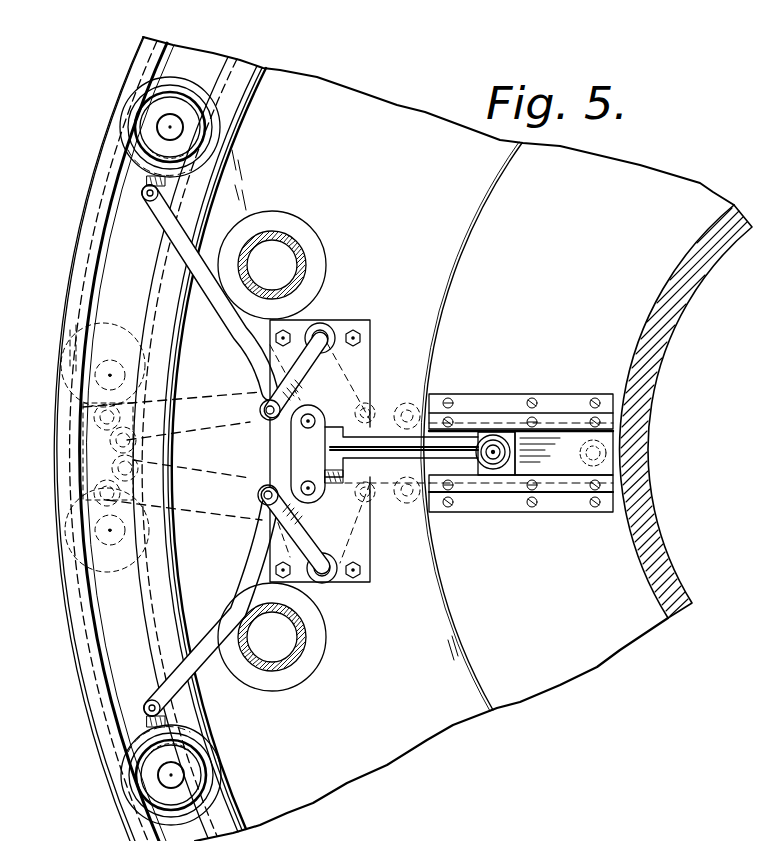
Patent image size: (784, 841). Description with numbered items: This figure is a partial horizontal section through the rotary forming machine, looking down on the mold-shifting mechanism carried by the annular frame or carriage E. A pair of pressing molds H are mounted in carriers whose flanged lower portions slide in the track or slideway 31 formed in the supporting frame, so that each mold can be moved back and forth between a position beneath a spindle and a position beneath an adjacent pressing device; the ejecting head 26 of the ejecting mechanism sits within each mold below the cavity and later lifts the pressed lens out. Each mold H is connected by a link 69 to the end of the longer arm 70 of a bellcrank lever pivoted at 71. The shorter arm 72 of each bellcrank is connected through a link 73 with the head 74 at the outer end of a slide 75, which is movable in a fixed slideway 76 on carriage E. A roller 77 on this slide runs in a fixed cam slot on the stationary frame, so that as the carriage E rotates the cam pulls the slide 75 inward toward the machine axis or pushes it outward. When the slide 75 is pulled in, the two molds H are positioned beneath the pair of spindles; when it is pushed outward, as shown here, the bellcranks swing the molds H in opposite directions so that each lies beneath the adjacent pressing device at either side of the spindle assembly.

The annular frame structure or carriage E is at (452, 716).
The pressing mold H is at (118, 118).
The track or slideway 31 is at (185, 48).
The head 26 is at (168, 126).
The link 69 is at (146, 181).
The longer arm 70 is at (241, 341).
The pivot 71 is at (321, 330).
The shorter arm 72 is at (277, 384).
The link 73 is at (292, 462).
The head 74 is at (305, 451).
The slide 75 is at (300, 428).
The fixed slideway 76 is at (518, 411).
The roller 77 is at (488, 435).